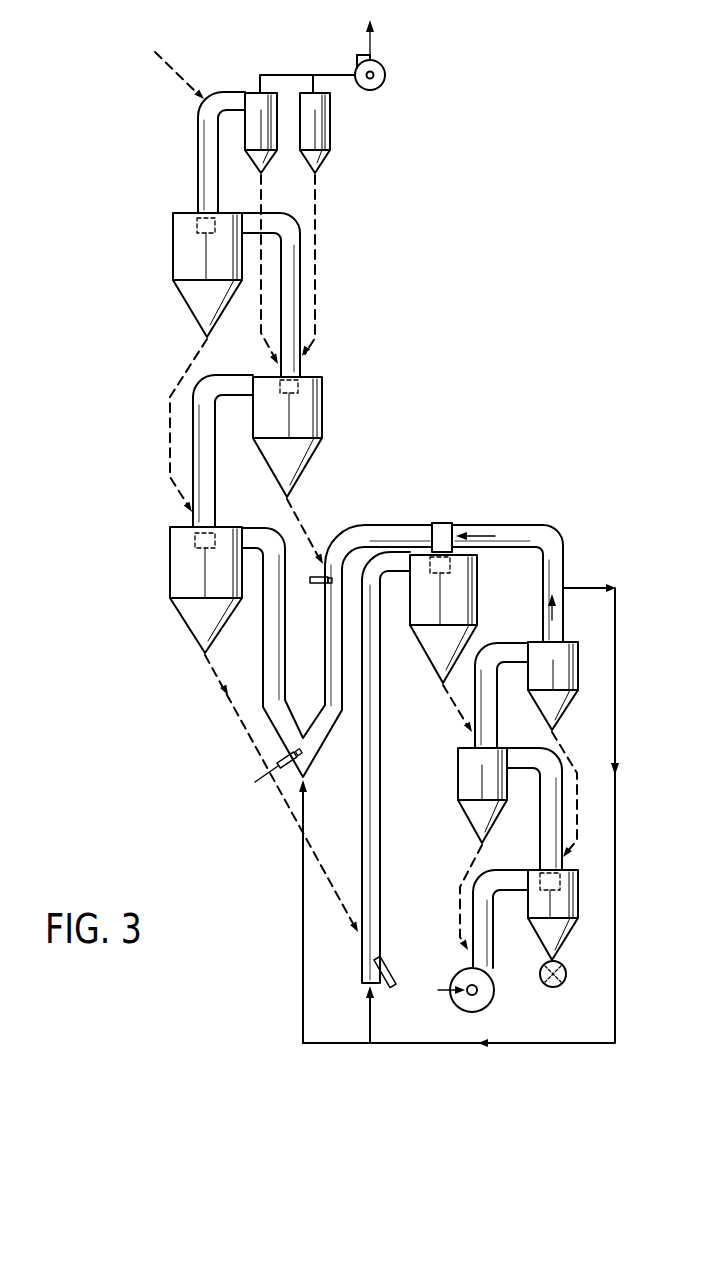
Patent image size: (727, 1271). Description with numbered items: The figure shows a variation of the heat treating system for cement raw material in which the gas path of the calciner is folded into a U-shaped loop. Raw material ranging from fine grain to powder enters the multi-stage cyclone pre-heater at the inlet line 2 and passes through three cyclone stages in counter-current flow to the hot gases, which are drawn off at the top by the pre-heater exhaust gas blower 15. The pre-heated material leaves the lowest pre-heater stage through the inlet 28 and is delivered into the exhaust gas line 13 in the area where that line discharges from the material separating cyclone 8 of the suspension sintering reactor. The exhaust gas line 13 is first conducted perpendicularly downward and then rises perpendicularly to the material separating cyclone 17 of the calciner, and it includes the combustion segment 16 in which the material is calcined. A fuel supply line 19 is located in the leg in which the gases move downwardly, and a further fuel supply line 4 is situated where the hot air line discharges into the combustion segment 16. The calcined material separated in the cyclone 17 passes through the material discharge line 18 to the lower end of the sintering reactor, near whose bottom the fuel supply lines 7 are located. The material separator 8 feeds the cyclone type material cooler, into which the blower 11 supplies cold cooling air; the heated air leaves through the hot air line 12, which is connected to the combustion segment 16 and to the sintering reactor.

The inlet 2 is at (173, 70).
The fuel supply line 4 is at (260, 773).
The fuel supply lines 7 is at (398, 1000).
The material separator 8 is at (458, 593).
The blower 11 is at (482, 1002).
The hot air line 12 is at (417, 1047).
The exhaust gas line 13 is at (400, 530).
The pre-heater exhaust gas blower 15 is at (387, 72).
The combustion segment 16 is at (323, 642).
The material separating cyclone 17 is at (182, 568).
The material discharge line 18 is at (335, 890).
The fuel supply line 19 is at (310, 582).
The inlet 28 is at (310, 527).